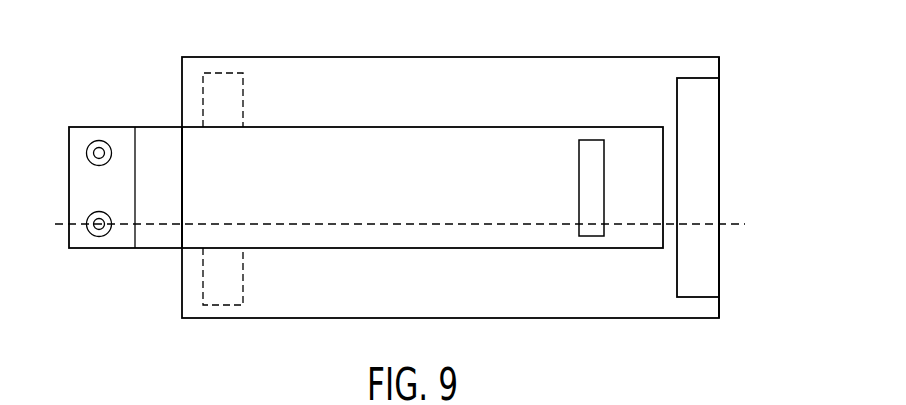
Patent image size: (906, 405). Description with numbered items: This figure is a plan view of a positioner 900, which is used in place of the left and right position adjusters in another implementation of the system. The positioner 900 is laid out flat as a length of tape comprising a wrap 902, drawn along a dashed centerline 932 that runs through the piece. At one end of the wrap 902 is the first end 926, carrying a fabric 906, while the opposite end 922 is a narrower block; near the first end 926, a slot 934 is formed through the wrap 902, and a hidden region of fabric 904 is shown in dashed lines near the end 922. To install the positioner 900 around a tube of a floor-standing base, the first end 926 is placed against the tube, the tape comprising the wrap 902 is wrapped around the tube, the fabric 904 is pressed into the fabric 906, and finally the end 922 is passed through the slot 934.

The positioner 900 is at (107, 69).
The wrap 902 is at (563, 320).
The fabric 904 is at (223, 307).
The fabric 906 is at (700, 78).
The end 922 is at (69, 146).
The first end 926 is at (720, 303).
The centerline axis 932 is at (729, 223).
The slot 934 is at (595, 237).